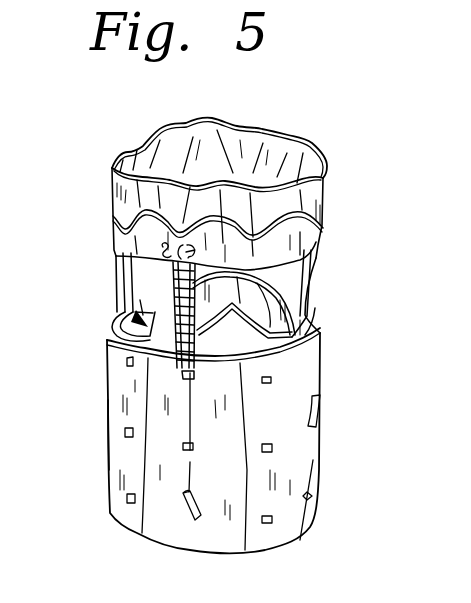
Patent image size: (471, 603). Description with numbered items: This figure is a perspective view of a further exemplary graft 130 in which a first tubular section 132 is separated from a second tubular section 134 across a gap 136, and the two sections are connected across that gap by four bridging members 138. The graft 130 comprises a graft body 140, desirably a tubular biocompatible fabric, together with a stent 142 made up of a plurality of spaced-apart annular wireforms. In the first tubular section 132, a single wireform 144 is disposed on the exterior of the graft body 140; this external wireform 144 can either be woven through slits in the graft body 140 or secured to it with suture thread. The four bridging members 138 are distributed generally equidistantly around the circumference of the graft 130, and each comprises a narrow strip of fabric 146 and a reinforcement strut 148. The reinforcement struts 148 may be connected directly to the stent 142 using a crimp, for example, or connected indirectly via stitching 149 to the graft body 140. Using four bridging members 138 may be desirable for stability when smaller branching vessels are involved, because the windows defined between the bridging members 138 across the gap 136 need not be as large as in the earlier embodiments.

The graft 130 is at (309, 131).
The first tubular section 132 is at (345, 138).
The second tubular section 134 is at (345, 330).
The gap 136 is at (345, 239).
The bridging members 138 is at (150, 338).
The graft body 140 is at (131, 486).
The stent 142 is at (121, 296).
The wireform 144 is at (124, 227).
The narrow strip of fabric 146 is at (172, 268).
The reinforcement strut 148 is at (122, 254).
The stitching 149 is at (171, 243).